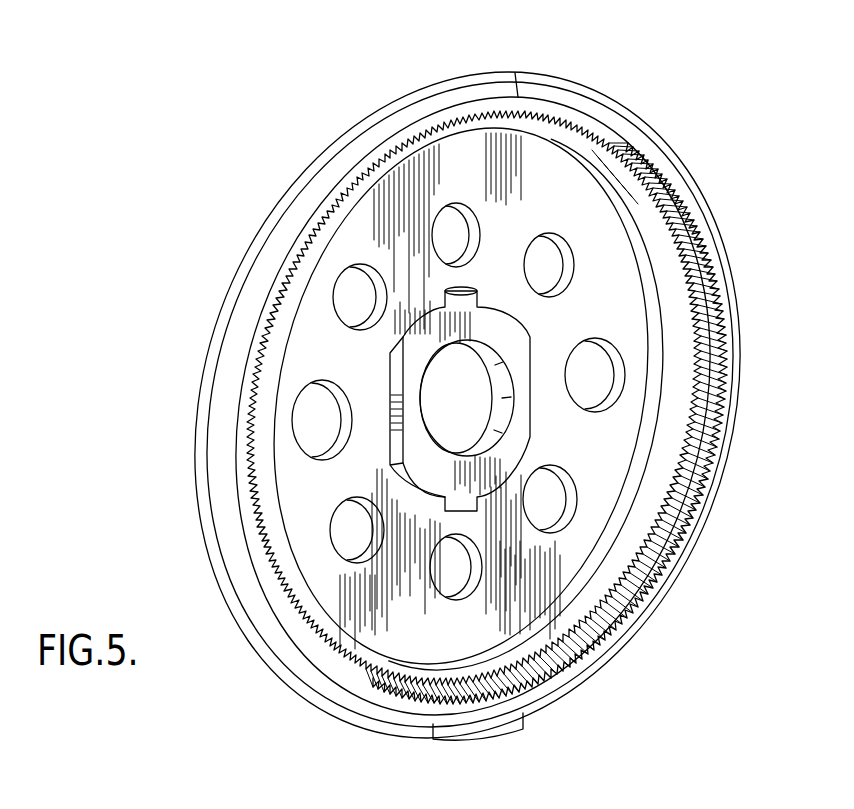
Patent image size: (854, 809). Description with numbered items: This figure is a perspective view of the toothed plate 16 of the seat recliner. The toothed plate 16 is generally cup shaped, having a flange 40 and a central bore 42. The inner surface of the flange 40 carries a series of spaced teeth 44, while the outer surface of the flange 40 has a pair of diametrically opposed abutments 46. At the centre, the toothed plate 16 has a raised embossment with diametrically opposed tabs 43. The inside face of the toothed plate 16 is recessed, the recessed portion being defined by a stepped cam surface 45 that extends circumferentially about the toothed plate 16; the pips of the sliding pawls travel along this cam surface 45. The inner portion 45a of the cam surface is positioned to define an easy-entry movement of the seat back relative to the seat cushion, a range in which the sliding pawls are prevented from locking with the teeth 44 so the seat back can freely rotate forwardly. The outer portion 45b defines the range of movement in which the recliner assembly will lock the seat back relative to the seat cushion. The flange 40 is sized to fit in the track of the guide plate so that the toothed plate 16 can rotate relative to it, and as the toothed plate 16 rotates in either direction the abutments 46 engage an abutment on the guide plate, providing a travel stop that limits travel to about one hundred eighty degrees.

The toothed plate 16 is at (270, 221).
The flange 40 is at (233, 459).
The central bore 42 is at (497, 412).
The tabs 43 is at (476, 291).
The teeth 44 is at (293, 637).
The cam surface 45 is at (643, 262).
The inner portion of the cam surface 45a is at (653, 357).
The outer portion of the cam surface 45b is at (592, 603).
The abutments 46 is at (519, 73).